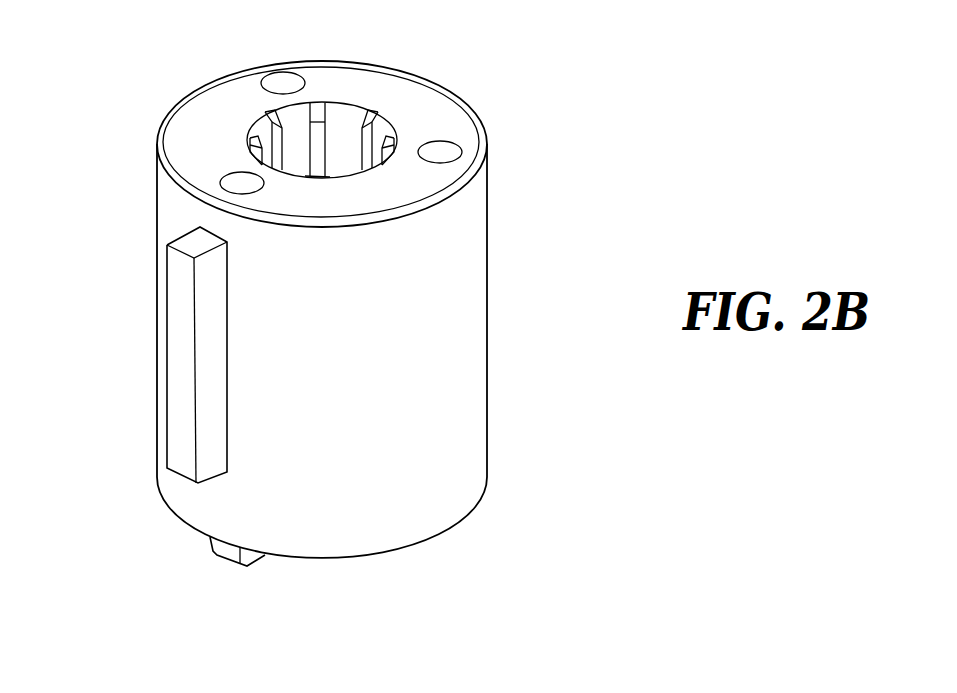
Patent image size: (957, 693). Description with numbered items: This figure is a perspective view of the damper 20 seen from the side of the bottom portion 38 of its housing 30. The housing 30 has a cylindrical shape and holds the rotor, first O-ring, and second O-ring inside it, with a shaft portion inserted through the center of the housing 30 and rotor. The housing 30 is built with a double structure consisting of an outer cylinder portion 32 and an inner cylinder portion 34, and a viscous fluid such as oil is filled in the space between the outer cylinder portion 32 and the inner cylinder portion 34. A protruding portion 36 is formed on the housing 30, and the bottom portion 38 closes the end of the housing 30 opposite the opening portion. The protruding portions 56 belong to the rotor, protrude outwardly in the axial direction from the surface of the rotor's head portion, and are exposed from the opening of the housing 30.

The damper 20 is at (327, 307).
The housing 30 is at (327, 304).
The outer cylinder portion 32 is at (466, 263).
The inner cylinder portion 34 is at (343, 113).
The protruding portion 36 is at (178, 340).
The bottom portion 38 is at (428, 96).
The protruding portions 56 is at (227, 558).